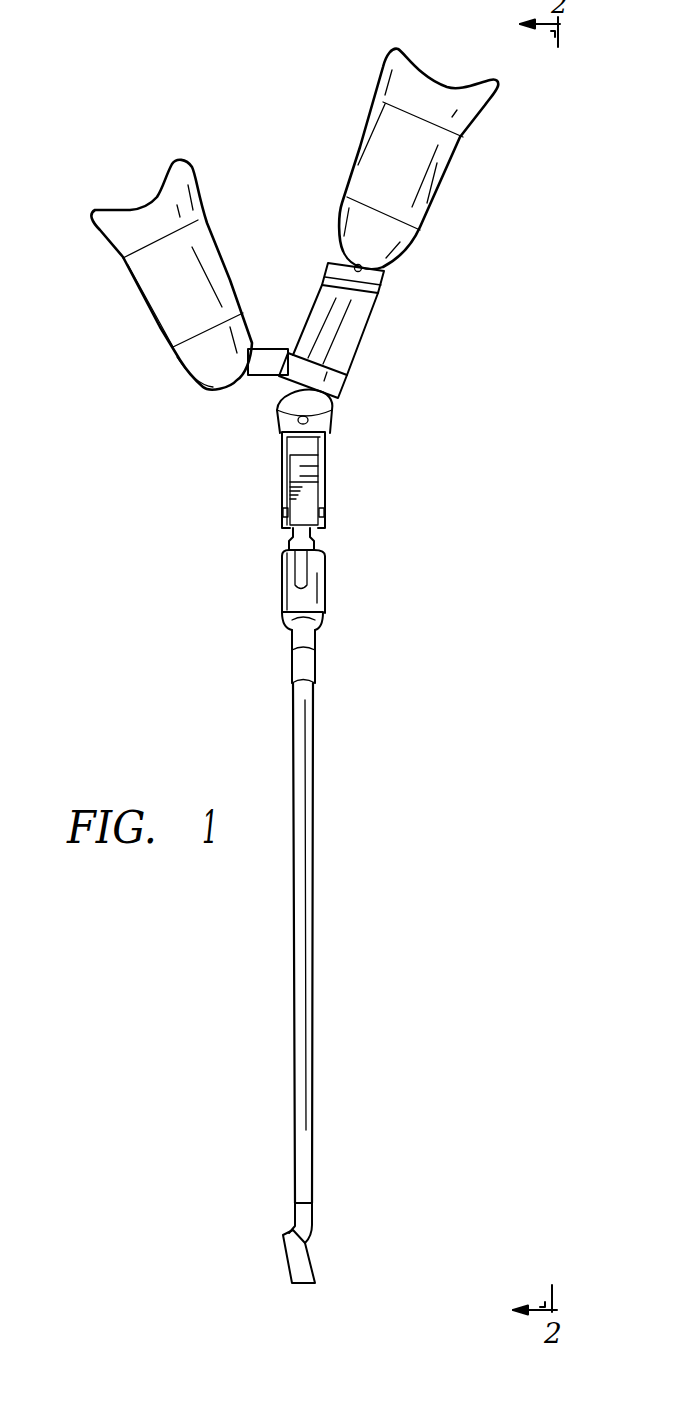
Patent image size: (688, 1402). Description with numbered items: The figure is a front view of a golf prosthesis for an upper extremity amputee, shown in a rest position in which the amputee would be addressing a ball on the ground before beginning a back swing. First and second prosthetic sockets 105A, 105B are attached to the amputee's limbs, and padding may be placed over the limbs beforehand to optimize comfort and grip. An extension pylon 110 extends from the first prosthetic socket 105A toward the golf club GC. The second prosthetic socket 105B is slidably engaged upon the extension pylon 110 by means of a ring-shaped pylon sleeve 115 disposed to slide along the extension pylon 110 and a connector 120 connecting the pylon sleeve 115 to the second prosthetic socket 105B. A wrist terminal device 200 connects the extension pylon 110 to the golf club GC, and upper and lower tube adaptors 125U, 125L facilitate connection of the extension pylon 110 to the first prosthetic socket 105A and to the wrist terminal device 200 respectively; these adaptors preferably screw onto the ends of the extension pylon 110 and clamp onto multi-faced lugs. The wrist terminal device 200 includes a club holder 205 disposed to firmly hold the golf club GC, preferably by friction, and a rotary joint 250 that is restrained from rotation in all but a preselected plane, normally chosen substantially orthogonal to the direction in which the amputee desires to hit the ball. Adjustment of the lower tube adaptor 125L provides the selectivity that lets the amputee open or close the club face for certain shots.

The first prosthetic socket 105A is at (360, 150).
The second prosthetic socket 105B is at (130, 210).
The extension pylon 110 is at (368, 325).
The pylon sleeve 115 is at (350, 377).
The connector 120 is at (273, 349).
The upper tube adaptor 125U is at (385, 279).
The lower tube adaptor 125L is at (337, 412).
The wrist terminal device 200 is at (258, 428).
The club holder 205 is at (325, 595).
The rotary joint 250 is at (327, 477).
The golf club GC is at (315, 943).